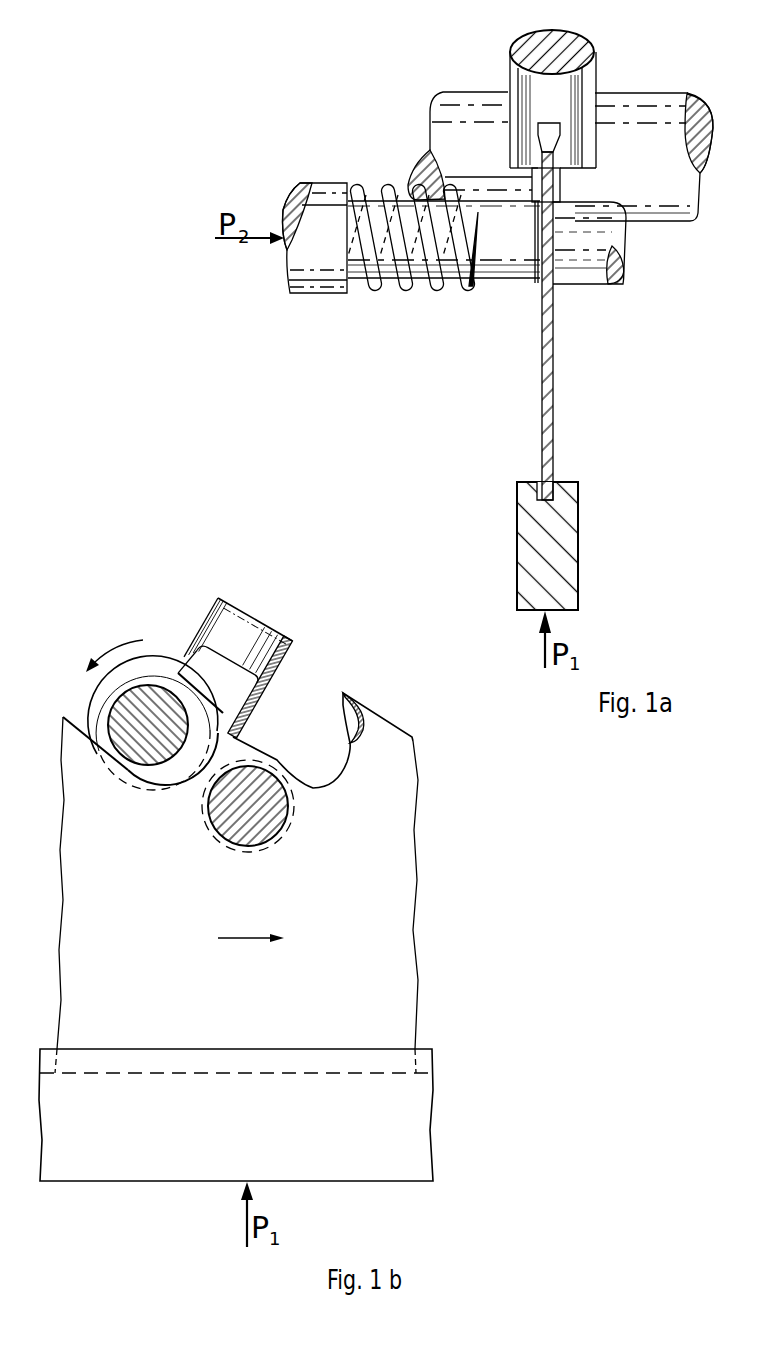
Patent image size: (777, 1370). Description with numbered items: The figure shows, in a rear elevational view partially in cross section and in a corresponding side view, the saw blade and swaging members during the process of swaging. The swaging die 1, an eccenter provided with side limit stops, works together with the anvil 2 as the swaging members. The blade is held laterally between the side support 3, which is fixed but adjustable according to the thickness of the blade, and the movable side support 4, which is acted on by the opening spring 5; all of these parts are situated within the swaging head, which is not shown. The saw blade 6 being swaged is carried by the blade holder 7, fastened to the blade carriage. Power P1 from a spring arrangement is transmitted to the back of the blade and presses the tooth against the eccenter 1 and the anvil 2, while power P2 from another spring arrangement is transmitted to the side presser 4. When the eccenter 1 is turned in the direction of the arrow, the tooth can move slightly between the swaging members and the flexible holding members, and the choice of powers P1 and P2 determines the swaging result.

In FIG. 1A, the swaging die 1 is at (610, 105).
In FIG. 1B, the swaging die 1 is at (113, 715).
In FIG. 1A, the anvil 2 is at (593, 44).
In FIG. 1B, the anvil 2 is at (213, 632).
In FIG. 1A, the side support 3 is at (598, 277).
In FIG. 1A, the movable side support 4 is at (322, 193).
In FIG. 1A, the opening spring 5 is at (391, 192).
In FIG. 1A, the saw blade 6 is at (554, 363).
In FIG. 1B, the saw blade 6 is at (168, 910).
In FIG. 1A, the blade holder 7 is at (579, 492).
In FIG. 1B, the blade holder 7 is at (173, 1133).